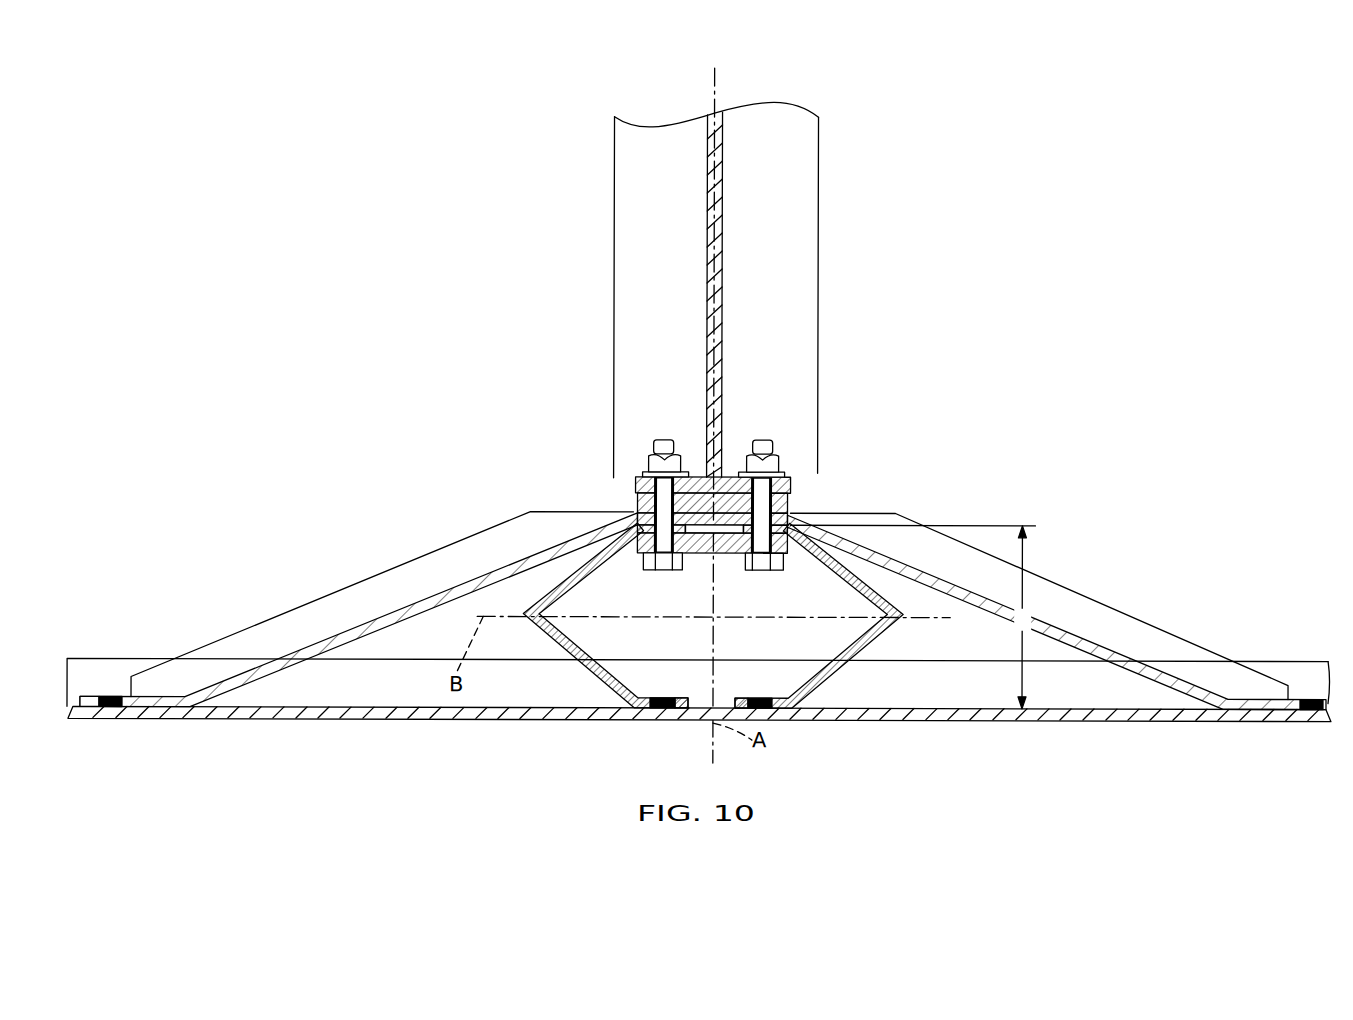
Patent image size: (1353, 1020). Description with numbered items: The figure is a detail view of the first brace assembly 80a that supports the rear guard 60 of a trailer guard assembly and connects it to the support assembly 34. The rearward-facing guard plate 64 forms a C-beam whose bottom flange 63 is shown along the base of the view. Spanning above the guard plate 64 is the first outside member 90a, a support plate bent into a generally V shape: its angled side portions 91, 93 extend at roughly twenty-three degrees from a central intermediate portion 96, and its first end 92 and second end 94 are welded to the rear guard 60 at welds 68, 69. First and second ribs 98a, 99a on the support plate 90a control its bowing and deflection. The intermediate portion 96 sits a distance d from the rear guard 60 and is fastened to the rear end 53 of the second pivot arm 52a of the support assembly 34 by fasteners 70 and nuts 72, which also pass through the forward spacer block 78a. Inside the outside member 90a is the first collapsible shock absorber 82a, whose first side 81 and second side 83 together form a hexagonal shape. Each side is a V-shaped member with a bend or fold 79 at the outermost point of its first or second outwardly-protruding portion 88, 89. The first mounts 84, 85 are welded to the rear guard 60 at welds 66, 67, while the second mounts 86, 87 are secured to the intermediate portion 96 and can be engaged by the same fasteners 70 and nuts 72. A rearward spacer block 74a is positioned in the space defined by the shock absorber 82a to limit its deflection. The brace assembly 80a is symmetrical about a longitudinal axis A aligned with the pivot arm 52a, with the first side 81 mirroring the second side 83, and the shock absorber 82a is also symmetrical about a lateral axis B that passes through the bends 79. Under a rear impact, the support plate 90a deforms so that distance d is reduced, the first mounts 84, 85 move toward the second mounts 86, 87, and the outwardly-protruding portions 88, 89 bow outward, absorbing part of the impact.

The rear guard 60 is at (988, 166).
The second pivot arm 52a is at (802, 222).
The support assembly 34 is at (849, 286).
The nut 72 is at (648, 466).
The intermediate portion 96 is at (718, 518).
The rear end 53 is at (790, 480).
The forward spacer block 78a is at (787, 505).
The rearward spacer block 74a is at (787, 548).
The first brace assembly 80a is at (980, 505).
The first side 81 is at (856, 560).
The side portion 91 is at (468, 585).
The first outside member 90a is at (990, 603).
The second rib 99a is at (330, 596).
The first rib 98a is at (1070, 592).
The side portion 93 is at (1118, 656).
The second outwardly-protruding portion 89 is at (583, 566).
The first outwardly-protruding portion 88 is at (838, 676).
The second side 83 is at (586, 663).
The first collapsible shock absorber 82a is at (827, 703).
The bend or fold 79 is at (532, 622).
The second mount 87 is at (684, 535).
The second mount 86 is at (742, 535).
The fastener 70 is at (661, 571).
The first mount 85 is at (680, 700).
The first mount 84 is at (744, 700).
The weld 66 is at (662, 708).
The weld 67 is at (765, 708).
The weld 68 is at (112, 697).
The second end 94 is at (1327, 703).
The first end 92 is at (93, 697).
The bottom flange 63 is at (68, 675).
The weld 69 is at (1307, 702).
The guard plate 64 is at (985, 720).
The distance d is at (1022, 617).